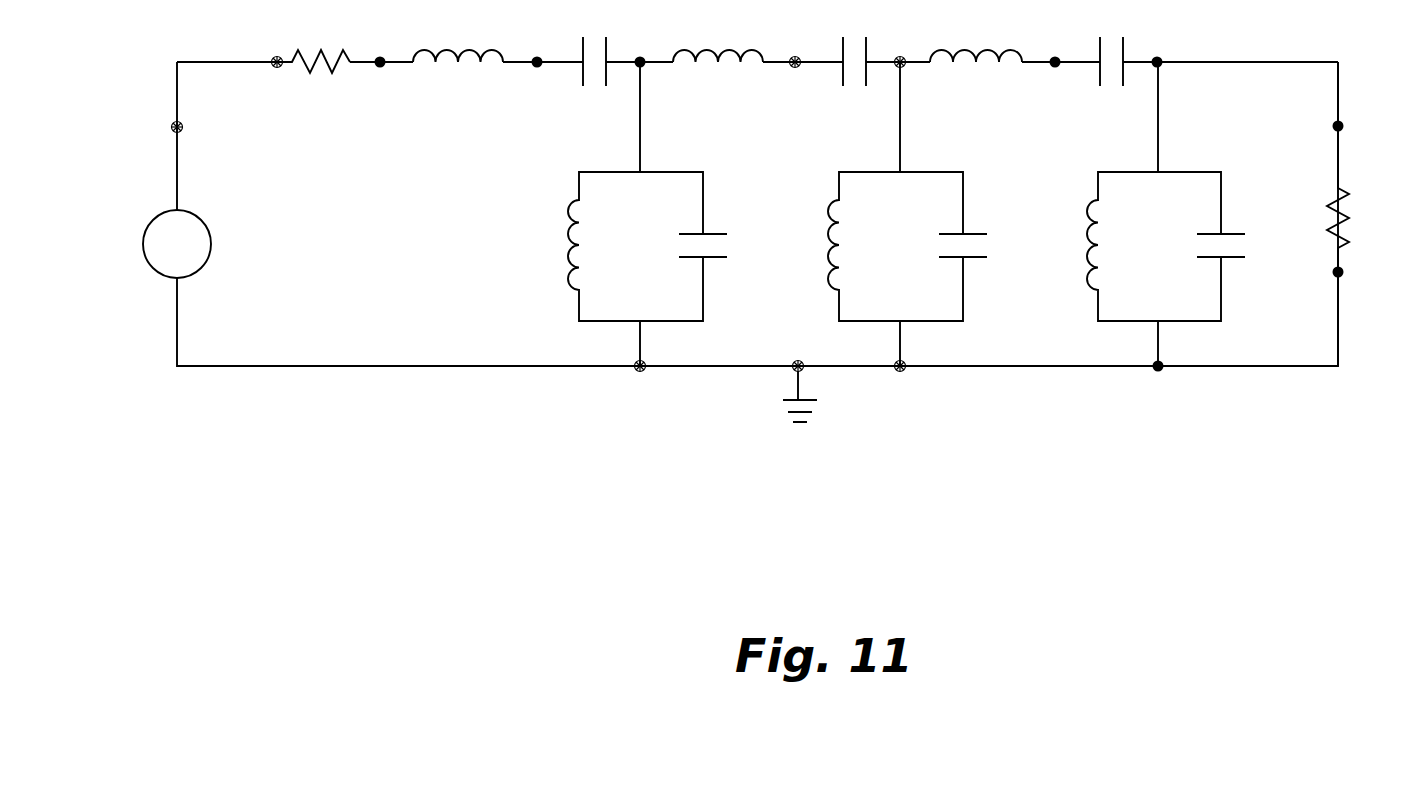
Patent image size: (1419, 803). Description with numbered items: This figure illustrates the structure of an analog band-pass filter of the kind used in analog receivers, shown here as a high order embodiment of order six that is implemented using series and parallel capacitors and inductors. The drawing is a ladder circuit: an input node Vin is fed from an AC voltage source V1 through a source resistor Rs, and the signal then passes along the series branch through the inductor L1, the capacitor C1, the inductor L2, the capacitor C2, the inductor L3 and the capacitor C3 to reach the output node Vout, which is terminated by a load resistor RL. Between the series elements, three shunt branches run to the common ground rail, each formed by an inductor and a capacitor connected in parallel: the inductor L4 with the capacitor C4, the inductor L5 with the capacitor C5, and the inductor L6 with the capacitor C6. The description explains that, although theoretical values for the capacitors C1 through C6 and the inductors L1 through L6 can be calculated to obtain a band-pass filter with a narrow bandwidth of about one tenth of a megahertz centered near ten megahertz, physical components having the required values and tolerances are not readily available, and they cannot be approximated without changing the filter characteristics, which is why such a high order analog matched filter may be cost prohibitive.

The input voltage node Vin is at (158, 127).
The output voltage node Vout is at (1360, 127).
The AC voltage source V1 is at (203, 244).
The source resistor 50 ohm Rs is at (313, 89).
The inductor L1 is at (458, 73).
The capacitor C1 is at (596, 77).
The inductor L2 is at (718, 73).
The capacitor C2 is at (854, 61).
The inductor L3 is at (976, 73).
The capacitor C3 is at (1112, 77).
The load resistor RL is at (1353, 214).
The inductor L4 is at (588, 246).
The capacitor C4 is at (683, 246).
The inductor L5 is at (848, 246).
The capacitor C5 is at (943, 246).
The inductor L6 is at (1107, 246).
The capacitor C6 is at (1201, 246).